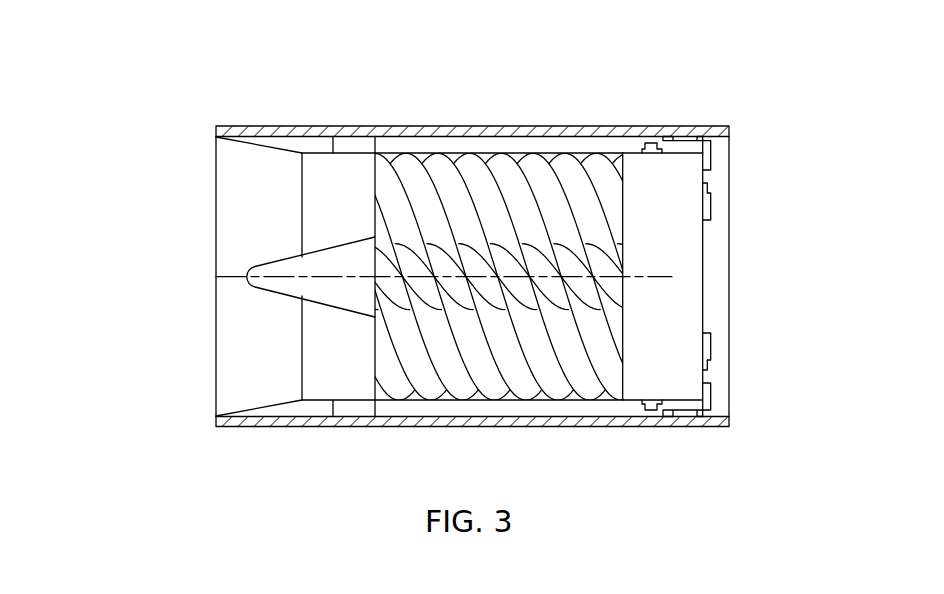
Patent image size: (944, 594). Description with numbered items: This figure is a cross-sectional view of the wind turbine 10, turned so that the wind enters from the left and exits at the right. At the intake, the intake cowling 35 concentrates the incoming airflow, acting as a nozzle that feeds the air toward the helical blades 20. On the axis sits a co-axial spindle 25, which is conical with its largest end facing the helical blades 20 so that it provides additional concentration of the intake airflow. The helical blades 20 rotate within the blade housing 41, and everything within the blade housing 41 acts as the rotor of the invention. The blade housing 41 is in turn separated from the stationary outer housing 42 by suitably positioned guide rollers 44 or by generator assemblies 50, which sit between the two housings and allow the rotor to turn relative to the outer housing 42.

The wind turbine 10 is at (203, 110).
The helical blades 20 is at (595, 238).
The co-axial spindle 25 is at (330, 243).
The intake cowling 35 is at (262, 406).
The blade housing 41 is at (427, 152).
The outer housing 42 is at (347, 127).
The guide rollers 44 is at (365, 148).
The generator assemblies 50 is at (712, 397).